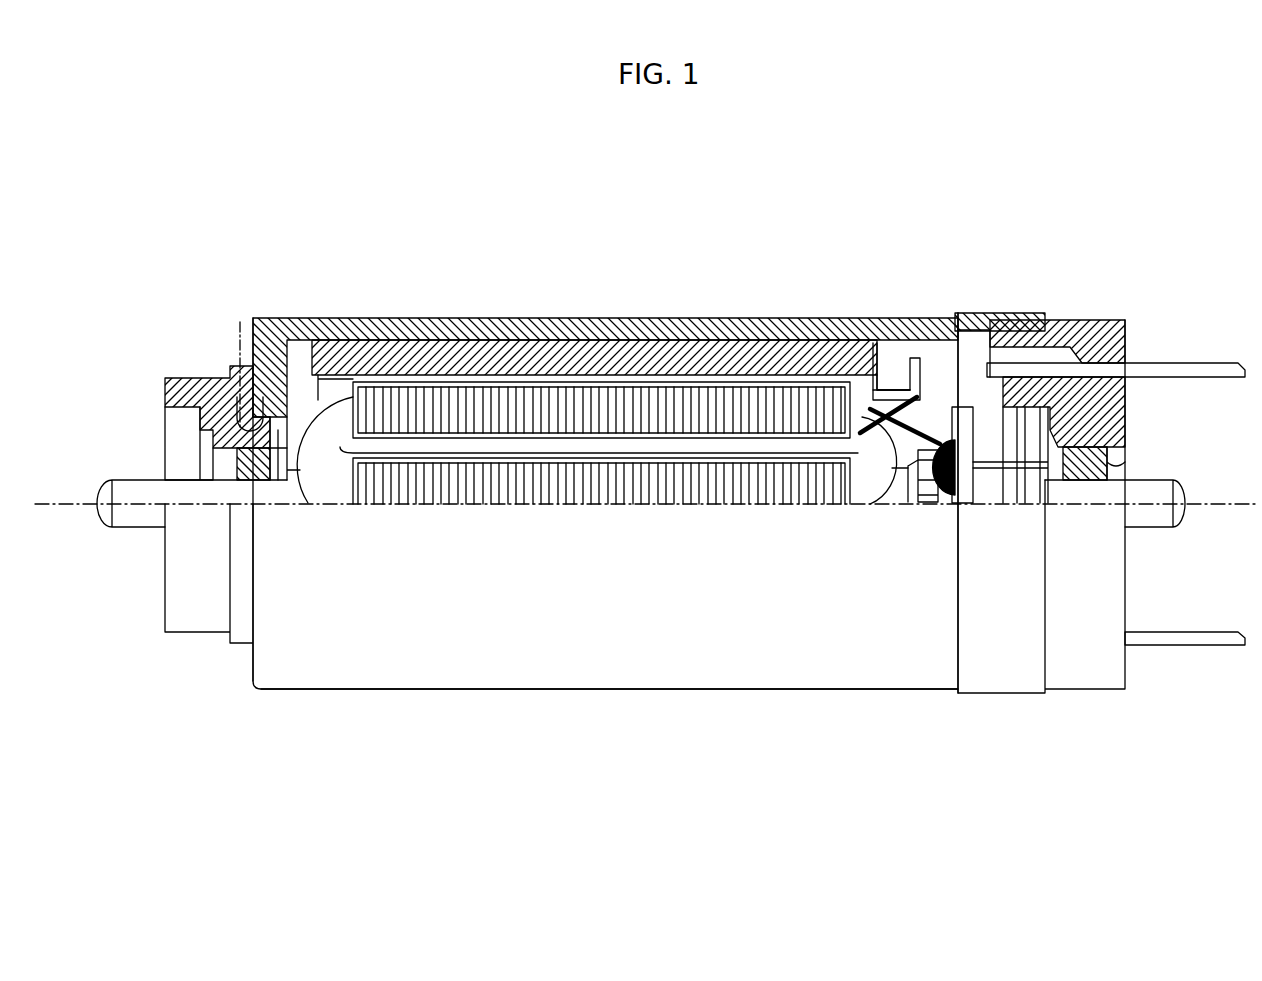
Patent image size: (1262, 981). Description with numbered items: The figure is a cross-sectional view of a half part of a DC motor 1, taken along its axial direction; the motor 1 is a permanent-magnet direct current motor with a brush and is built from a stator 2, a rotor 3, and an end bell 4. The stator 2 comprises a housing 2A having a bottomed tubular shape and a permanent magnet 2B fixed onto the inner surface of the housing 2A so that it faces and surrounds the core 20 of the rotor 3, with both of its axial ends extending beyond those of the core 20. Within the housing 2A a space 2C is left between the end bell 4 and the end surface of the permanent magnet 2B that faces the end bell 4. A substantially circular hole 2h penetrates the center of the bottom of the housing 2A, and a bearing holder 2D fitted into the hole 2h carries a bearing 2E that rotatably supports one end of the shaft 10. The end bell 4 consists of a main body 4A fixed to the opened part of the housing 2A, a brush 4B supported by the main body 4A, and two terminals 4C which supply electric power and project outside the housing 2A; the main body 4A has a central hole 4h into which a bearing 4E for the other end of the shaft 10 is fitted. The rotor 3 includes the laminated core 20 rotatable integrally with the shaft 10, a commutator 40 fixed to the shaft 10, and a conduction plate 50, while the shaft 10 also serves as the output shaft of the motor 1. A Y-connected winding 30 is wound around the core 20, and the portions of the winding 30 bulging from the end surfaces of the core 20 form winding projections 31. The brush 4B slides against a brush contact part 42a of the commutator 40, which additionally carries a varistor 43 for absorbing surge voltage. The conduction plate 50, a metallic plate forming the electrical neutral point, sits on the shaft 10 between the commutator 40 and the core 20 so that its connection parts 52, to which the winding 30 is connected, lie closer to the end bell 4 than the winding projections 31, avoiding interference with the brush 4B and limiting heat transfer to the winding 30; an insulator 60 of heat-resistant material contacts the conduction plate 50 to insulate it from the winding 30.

The DC motor 1 is at (1057, 210).
The stator 2 is at (650, 705).
The housing 2A is at (392, 690).
The permanent magnet 2B is at (360, 340).
The space 2C is at (962, 400).
The bearing holder 2D is at (186, 380).
The bearing 2E is at (215, 470).
The hole 2h is at (244, 361).
The rotor 3 is at (665, 375).
The end bell 4 is at (1090, 702).
The main body 4A is at (1093, 320).
The brush 4B is at (1075, 437).
The terminals 4C is at (1225, 365).
The bearing 4E is at (1082, 482).
The hole 4h is at (1115, 462).
The shaft 10 is at (136, 523).
The core 20 is at (462, 420).
The winding 30 is at (511, 442).
The winding projection 31 is at (318, 430).
The commutator 40 is at (925, 512).
The brush contact part 42a is at (988, 490).
The varistor 43 is at (967, 408).
The conduction plate 50 is at (866, 395).
The connection parts 52 is at (912, 358).
The insulator 60 is at (893, 382).